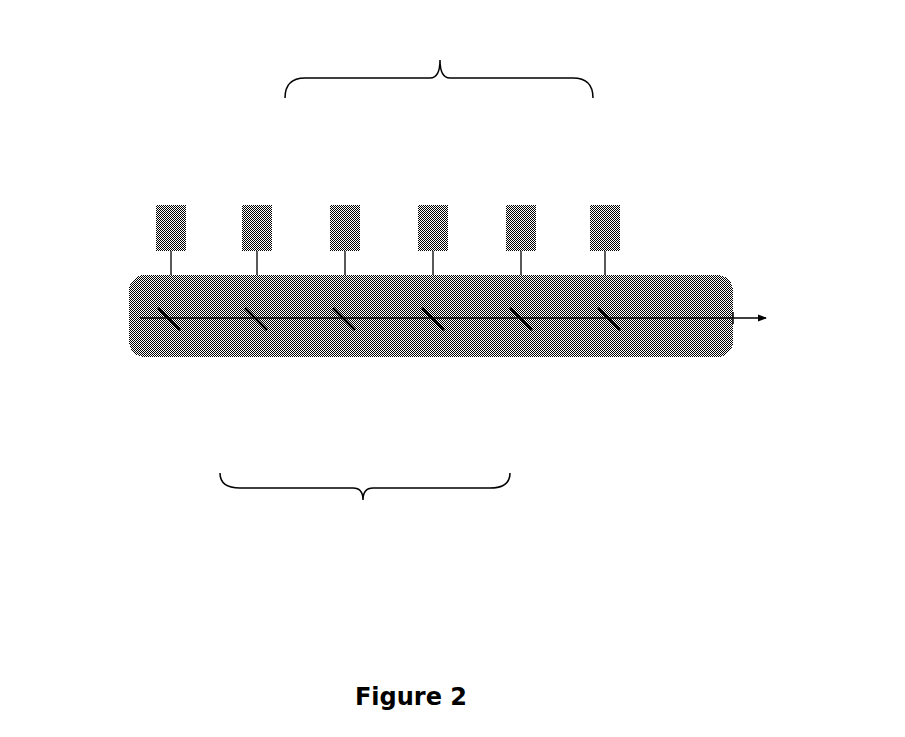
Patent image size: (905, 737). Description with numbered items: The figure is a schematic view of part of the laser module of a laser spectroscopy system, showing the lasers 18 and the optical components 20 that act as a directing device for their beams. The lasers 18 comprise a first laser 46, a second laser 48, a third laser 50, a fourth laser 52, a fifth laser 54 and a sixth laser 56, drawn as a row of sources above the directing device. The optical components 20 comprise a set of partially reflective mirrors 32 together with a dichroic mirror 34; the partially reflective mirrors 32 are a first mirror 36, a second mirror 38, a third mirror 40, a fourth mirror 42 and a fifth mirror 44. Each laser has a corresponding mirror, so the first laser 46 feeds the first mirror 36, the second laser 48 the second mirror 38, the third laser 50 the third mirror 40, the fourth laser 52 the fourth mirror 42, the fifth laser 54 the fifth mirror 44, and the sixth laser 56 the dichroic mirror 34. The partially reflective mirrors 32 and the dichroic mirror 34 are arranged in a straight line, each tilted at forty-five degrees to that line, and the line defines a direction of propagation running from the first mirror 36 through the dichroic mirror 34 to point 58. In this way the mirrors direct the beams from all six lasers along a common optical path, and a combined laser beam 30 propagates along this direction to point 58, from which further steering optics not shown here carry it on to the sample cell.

The lasers 18 is at (439, 57).
The optical components 20 is at (117, 350).
The combined laser beam 30 is at (765, 310).
The partially reflective mirrors 32 is at (365, 512).
The dichroic mirror 34 is at (610, 336).
The first mirror 36 is at (180, 340).
The second mirror 38 is at (257, 336).
The third mirror 40 is at (341, 336).
The fourth mirror 42 is at (423, 336).
The fifth mirror 44 is at (514, 336).
The first laser 46 is at (178, 200).
The second laser 48 is at (262, 200).
The third laser 50 is at (350, 196).
The fourth laser 52 is at (433, 198).
The fifth laser 54 is at (518, 198).
The sixth laser 56 is at (603, 197).
The point 58 is at (739, 326).